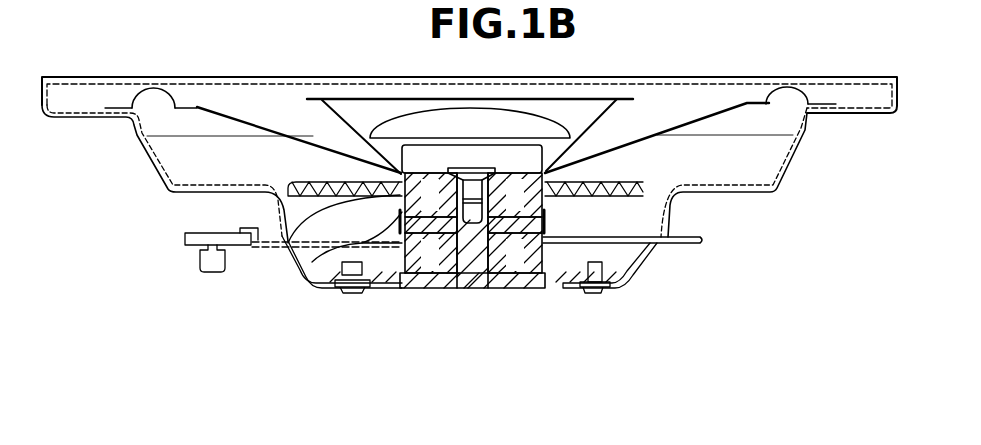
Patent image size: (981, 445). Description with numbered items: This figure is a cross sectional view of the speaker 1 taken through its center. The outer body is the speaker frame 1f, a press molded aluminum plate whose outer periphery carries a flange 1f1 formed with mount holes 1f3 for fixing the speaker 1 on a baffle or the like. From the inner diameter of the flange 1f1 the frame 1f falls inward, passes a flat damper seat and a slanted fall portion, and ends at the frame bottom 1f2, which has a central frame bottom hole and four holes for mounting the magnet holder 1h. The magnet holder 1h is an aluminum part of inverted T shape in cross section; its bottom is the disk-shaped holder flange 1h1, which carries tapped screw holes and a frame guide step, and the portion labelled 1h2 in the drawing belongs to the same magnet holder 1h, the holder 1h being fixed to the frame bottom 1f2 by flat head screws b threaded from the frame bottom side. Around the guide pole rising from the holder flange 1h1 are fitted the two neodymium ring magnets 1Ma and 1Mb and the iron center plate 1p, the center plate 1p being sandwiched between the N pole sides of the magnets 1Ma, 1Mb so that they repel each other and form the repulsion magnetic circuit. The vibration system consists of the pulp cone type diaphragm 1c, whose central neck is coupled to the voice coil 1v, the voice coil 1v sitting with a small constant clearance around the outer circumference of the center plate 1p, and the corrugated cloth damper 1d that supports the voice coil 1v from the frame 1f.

The speaker 1 is at (78, 397).
The speaker frame 1f is at (866, 186).
The flange 1f1 is at (108, 120).
The frame bottom 1f2 is at (570, 292).
The mount holes 1f3 is at (862, 99).
The cone type diaphragm 1c is at (677, 113).
The damper 1d is at (610, 177).
The magnet holder 1h is at (432, 348).
The holder flange 1h1 is at (537, 290).
The left magnet 1h2 is at (447, 290).
The center plate 1p is at (420, 228).
The voice coil 1v is at (307, 258).
The magnet 1Ma is at (293, 247).
The magnet 1Mb is at (390, 293).
The flat head screws b is at (480, 170).